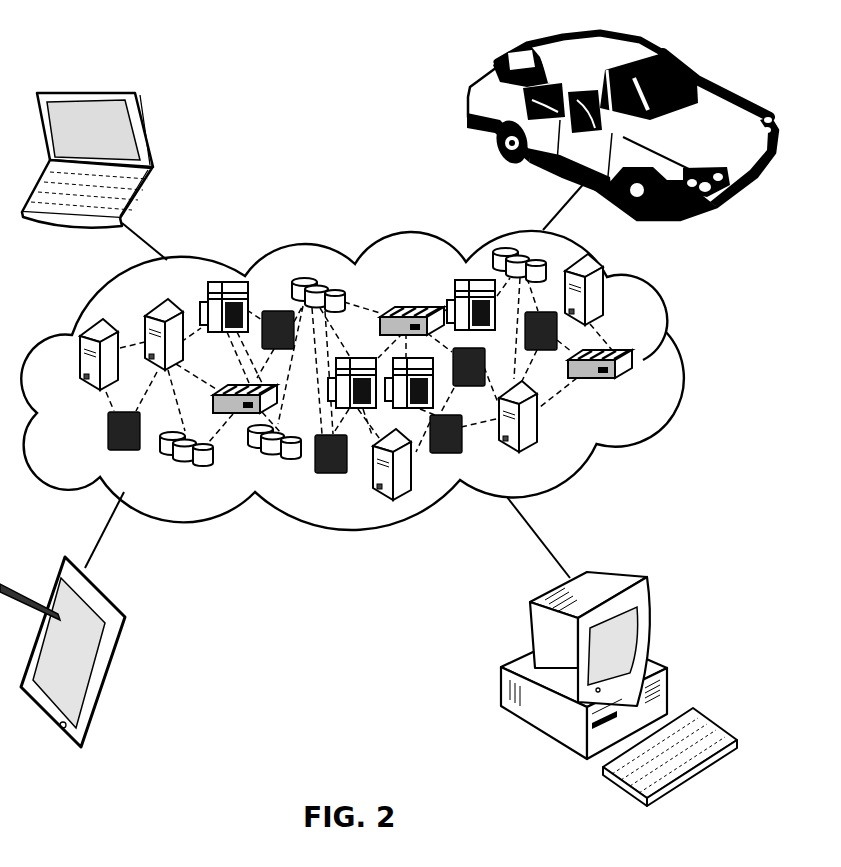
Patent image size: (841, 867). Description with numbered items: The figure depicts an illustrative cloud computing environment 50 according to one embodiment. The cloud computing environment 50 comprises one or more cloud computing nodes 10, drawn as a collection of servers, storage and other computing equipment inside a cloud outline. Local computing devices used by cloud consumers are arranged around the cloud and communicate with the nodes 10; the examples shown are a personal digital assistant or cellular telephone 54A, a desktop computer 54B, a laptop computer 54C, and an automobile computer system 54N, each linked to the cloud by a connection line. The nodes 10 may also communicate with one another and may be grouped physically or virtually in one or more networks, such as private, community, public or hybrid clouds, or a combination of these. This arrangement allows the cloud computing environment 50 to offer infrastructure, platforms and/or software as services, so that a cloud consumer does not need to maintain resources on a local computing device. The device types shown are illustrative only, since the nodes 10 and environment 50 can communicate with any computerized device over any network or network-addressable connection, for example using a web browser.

The cloud computing nodes 10 is at (642, 388).
The cloud computing environment 50 is at (683, 363).
The personal digital assistant (PDA) or cellular telephone 54A is at (119, 643).
The desktop computer 54B is at (623, 570).
The laptop computer 54C is at (147, 132).
The automobile computer system 54N is at (467, 113).